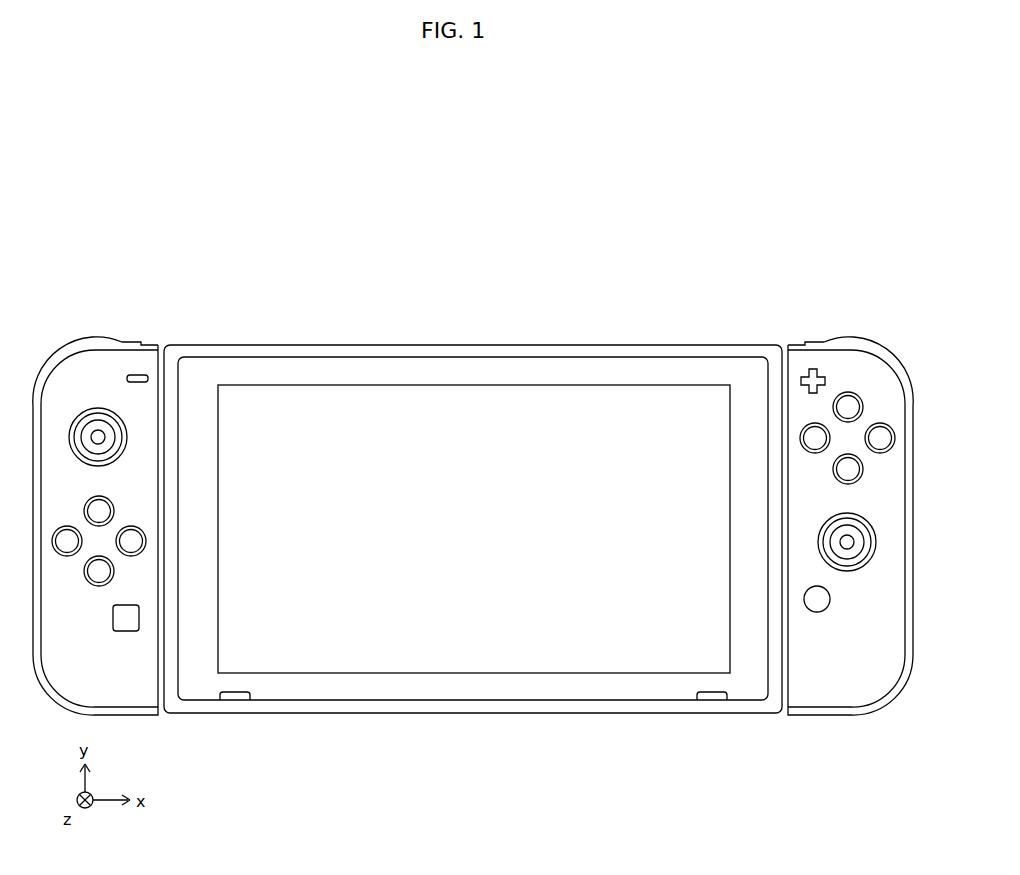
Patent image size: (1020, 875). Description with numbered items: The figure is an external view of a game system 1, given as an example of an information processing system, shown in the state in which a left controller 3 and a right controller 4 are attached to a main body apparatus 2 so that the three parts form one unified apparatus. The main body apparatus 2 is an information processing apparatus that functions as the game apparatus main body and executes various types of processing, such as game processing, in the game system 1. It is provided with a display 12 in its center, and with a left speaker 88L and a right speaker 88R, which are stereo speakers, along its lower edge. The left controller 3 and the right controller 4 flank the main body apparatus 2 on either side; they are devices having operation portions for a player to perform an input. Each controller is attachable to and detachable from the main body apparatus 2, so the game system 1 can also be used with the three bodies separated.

The game system 1 is at (583, 236).
The main body apparatus 2 is at (448, 347).
The left controller 3 is at (128, 344).
The right controller 4 is at (829, 344).
The display 12 is at (536, 385).
The left speaker 88L is at (240, 700).
The right speaker 88R is at (713, 700).